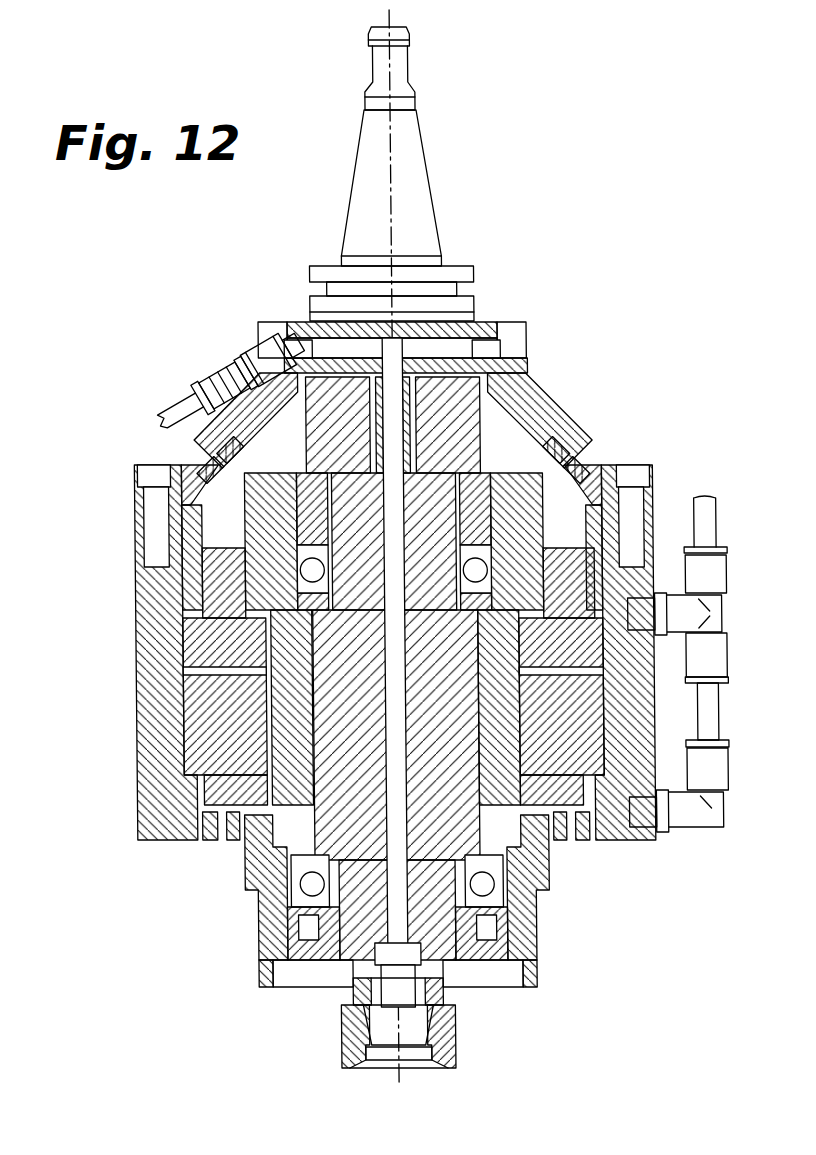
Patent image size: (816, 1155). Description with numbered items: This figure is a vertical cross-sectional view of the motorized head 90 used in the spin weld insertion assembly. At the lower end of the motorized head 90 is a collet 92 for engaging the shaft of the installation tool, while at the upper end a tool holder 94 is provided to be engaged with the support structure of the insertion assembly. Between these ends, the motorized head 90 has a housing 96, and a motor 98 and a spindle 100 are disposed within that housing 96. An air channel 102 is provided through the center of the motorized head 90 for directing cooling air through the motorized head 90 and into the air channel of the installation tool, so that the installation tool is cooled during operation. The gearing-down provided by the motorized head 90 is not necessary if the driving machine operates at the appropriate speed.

The motorized head 90 is at (236, 878).
The collet 92 is at (453, 1020).
The tool holder 94 is at (422, 173).
The housing 96 is at (135, 549).
The motor 98 is at (182, 708).
The spindle 100 is at (452, 767).
The air channel 102 is at (530, 413).